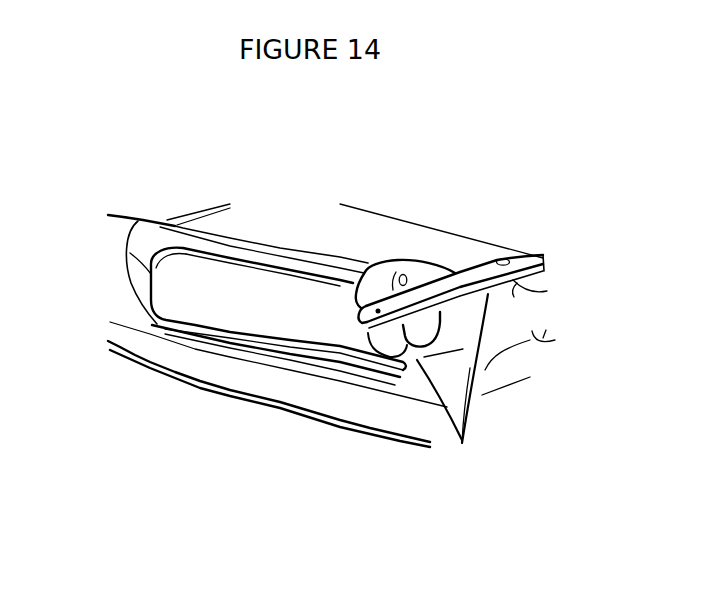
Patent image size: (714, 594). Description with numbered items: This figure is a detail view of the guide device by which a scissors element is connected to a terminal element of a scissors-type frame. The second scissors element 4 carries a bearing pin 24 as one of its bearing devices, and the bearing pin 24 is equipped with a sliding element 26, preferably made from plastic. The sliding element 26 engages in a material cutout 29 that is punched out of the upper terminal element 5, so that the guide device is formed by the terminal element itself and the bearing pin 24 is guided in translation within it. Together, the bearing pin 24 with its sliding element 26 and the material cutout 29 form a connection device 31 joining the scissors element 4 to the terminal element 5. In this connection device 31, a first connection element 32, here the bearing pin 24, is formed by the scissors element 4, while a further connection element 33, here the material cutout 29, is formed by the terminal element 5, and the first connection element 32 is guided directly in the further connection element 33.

The second scissors element 4 is at (538, 317).
The upper terminal element 5 is at (150, 362).
The bearing pin 24 is at (370, 318).
The sliding element 26 is at (421, 272).
The material cutout 29 is at (252, 288).
The connection device 31 is at (226, 512).
The first connection element 32 is at (366, 235).
The further connection element 33 is at (227, 323).